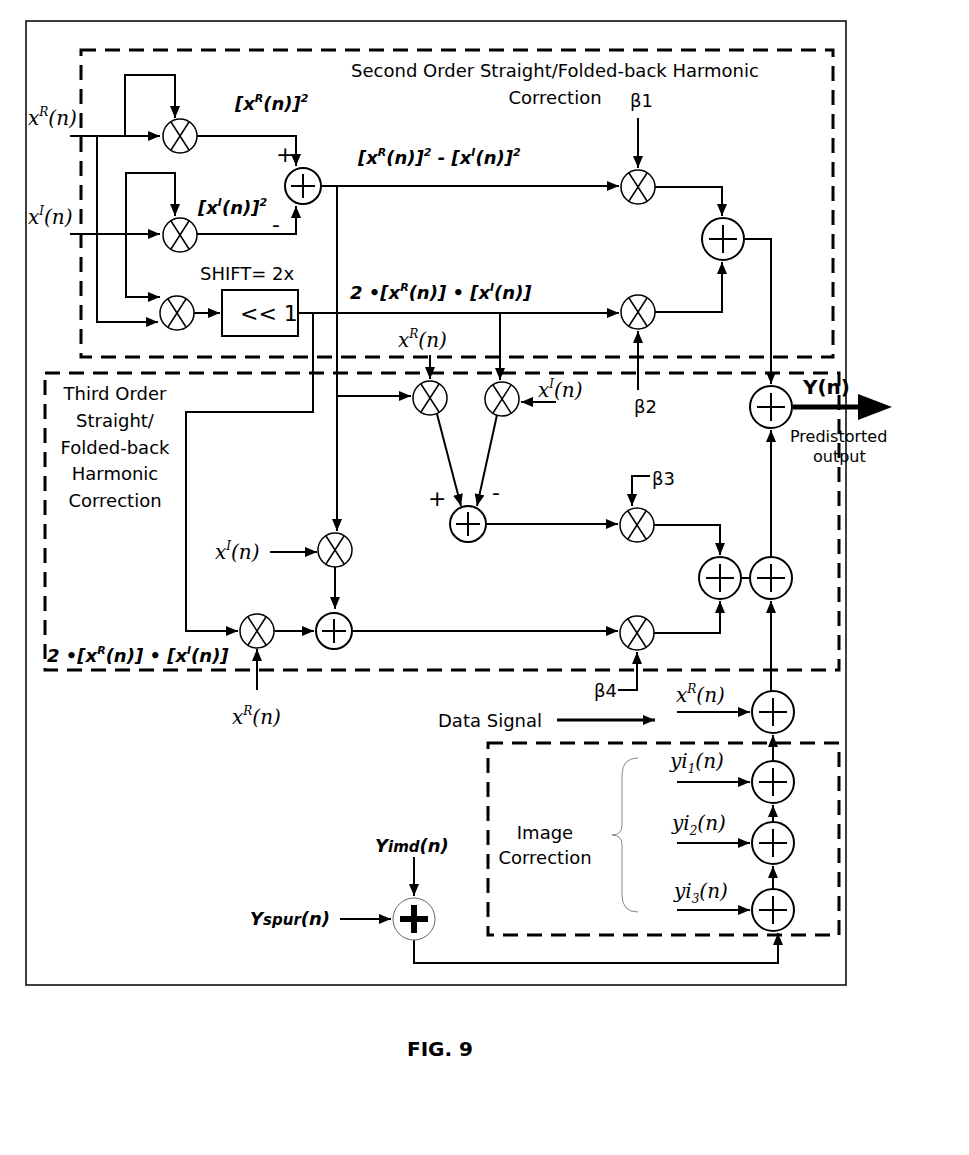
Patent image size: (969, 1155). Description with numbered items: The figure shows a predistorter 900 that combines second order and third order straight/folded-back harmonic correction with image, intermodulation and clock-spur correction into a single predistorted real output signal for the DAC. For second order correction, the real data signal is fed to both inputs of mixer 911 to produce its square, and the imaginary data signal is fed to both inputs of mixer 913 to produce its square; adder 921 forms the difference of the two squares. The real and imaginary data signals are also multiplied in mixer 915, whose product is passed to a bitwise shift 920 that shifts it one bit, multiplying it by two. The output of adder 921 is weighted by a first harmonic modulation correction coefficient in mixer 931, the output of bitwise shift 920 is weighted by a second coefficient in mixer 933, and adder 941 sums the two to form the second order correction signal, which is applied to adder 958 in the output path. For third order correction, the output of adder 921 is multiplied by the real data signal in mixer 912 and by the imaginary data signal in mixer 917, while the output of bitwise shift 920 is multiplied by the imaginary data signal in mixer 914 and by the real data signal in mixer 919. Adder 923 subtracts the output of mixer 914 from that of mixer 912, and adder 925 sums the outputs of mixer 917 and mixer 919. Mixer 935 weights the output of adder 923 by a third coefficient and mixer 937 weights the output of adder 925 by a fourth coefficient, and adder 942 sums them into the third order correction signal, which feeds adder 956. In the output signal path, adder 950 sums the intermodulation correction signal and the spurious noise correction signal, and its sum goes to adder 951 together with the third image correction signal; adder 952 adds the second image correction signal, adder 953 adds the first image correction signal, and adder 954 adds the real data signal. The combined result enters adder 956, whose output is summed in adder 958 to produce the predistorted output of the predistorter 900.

The predistorter 900 is at (436, 503).
The mixer 911 is at (197, 145).
The mixer 913 is at (176, 247).
The mixer 915 is at (173, 324).
The bitwise shift 920 is at (260, 324).
The adder 921 is at (318, 174).
The mixer 931 is at (662, 179).
The mixer 933 is at (660, 317).
The adder 941 is at (740, 234).
The mixer 912 is at (413, 411).
The mixer 914 is at (522, 413).
The mixer 917 is at (361, 550).
The mixer 919 is at (258, 621).
The adder 923 is at (471, 535).
The adder 925 is at (358, 623).
The mixer 935 is at (660, 521).
The mixer 937 is at (660, 641).
The adder 942 is at (699, 583).
The adder 956 is at (792, 578).
The adder 958 is at (745, 407).
The adder 954 is at (794, 712).
The adder 953 is at (794, 782).
The adder 952 is at (794, 843).
The adder 951 is at (797, 910).
The adder 950 is at (388, 907).